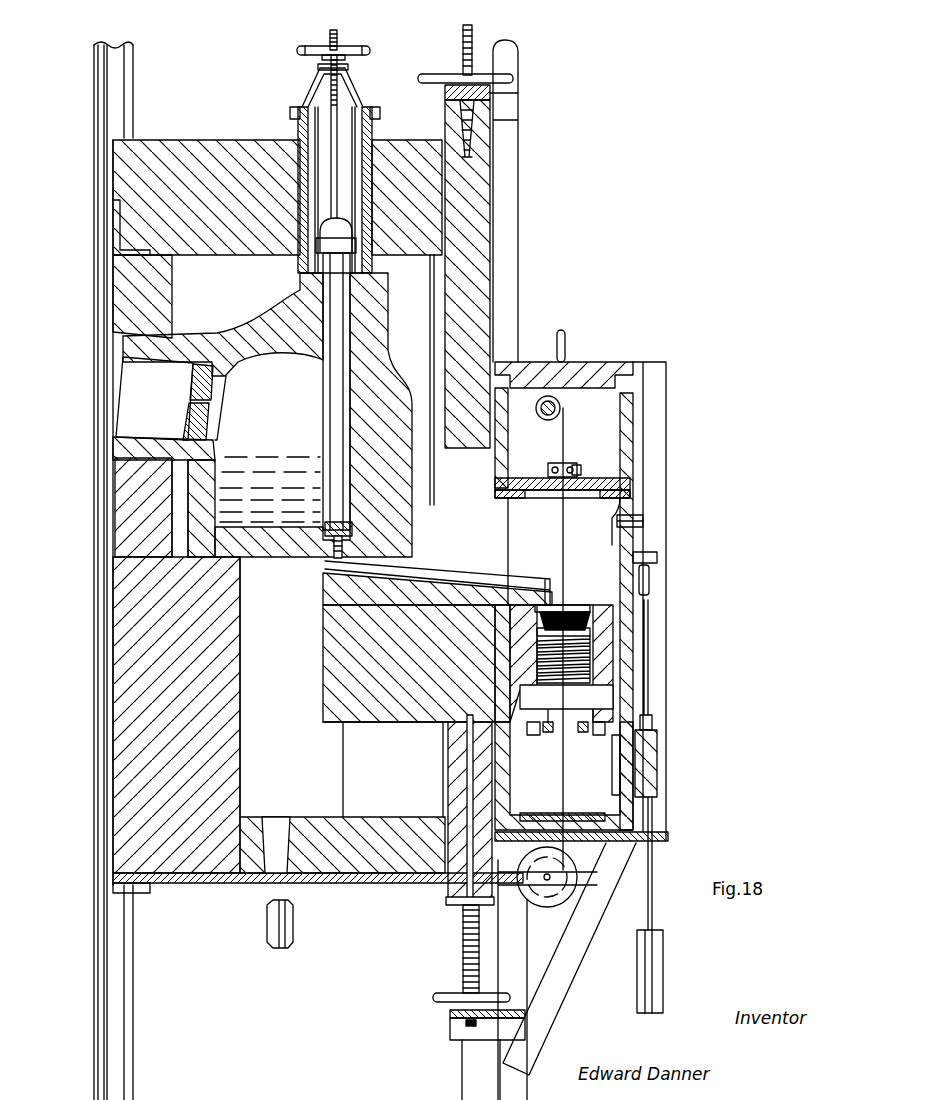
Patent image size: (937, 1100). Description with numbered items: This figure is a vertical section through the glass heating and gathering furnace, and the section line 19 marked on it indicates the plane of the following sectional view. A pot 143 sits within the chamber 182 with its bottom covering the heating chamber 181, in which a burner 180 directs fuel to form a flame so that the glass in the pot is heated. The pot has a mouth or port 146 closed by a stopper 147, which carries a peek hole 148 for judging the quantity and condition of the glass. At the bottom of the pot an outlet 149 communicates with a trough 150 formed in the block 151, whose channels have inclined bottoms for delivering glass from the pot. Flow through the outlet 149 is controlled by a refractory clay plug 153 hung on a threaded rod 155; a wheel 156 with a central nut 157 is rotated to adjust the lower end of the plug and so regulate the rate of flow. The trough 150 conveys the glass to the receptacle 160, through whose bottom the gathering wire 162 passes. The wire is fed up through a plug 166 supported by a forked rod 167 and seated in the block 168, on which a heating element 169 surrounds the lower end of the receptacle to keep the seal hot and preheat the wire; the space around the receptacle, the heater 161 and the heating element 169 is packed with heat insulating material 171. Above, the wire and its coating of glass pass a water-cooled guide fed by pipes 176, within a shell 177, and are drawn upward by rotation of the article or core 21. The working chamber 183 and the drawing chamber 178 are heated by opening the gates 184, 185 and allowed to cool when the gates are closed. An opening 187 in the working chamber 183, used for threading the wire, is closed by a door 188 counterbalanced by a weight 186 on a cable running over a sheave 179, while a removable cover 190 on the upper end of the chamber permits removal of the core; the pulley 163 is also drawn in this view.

The section line 19- 19 is at (695, 545).
The article or core 21 is at (541, 416).
The pot 143 is at (370, 418).
The mouth or port 146 is at (163, 392).
The stopper 147 is at (193, 418).
The peek hole 148 is at (197, 390).
The outlet 149 is at (347, 543).
The trough 150 is at (323, 593).
The block 151 is at (325, 617).
The refractory clay plug 153 is at (337, 360).
The threaded rod 155 is at (333, 118).
The wheel 156 is at (371, 52).
The central nut 157 is at (341, 45).
The receptacle 160 is at (580, 612).
The heater 161 is at (590, 622).
The wire 162 is at (565, 777).
The pulley 163 is at (543, 900).
The plug 166 is at (545, 713).
The forked rod 167 is at (548, 725).
The block 168 is at (595, 695).
The heating element 169 is at (593, 660).
The heat insulating material 171 is at (600, 647).
The pipe 176 is at (579, 472).
The shell 177 is at (563, 464).
The drawing chamber 178 is at (603, 573).
The sheave 179 is at (652, 612).
The burner 180 is at (277, 933).
The heating chamber 181 is at (275, 790).
The chamber 182 is at (240, 272).
The working chamber 183 is at (595, 432).
The gate 184 is at (455, 855).
The gate 185 is at (470, 296).
The weight 186 is at (652, 968).
The opening 187 is at (627, 772).
The door 188 is at (653, 758).
The cover 190 is at (588, 375).